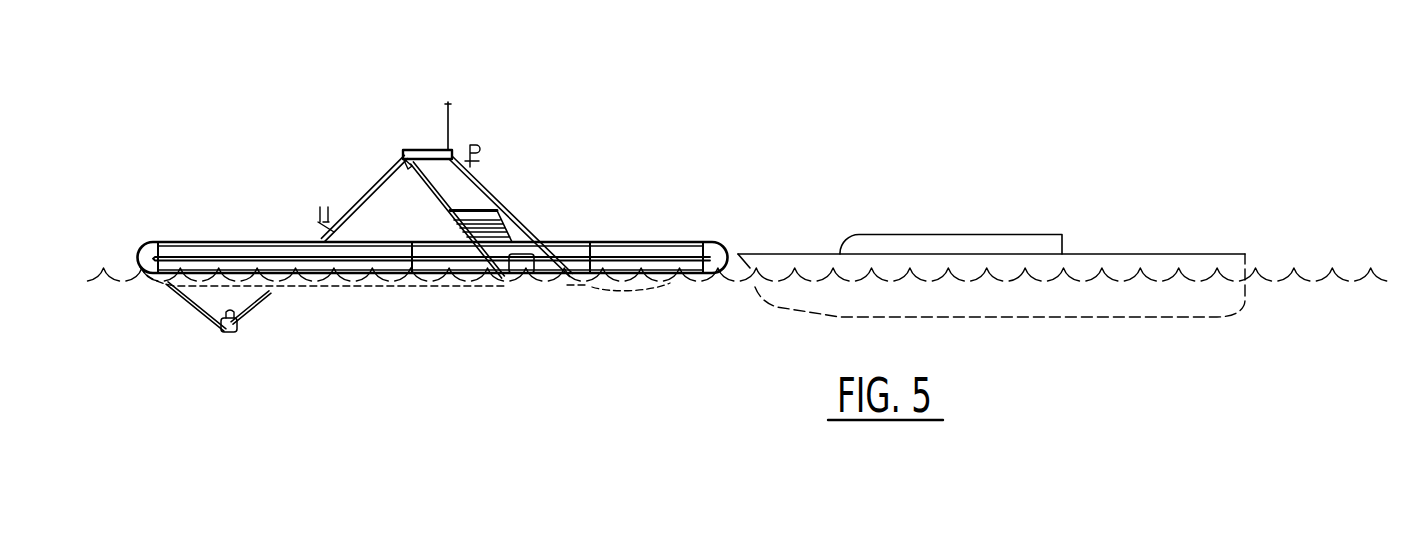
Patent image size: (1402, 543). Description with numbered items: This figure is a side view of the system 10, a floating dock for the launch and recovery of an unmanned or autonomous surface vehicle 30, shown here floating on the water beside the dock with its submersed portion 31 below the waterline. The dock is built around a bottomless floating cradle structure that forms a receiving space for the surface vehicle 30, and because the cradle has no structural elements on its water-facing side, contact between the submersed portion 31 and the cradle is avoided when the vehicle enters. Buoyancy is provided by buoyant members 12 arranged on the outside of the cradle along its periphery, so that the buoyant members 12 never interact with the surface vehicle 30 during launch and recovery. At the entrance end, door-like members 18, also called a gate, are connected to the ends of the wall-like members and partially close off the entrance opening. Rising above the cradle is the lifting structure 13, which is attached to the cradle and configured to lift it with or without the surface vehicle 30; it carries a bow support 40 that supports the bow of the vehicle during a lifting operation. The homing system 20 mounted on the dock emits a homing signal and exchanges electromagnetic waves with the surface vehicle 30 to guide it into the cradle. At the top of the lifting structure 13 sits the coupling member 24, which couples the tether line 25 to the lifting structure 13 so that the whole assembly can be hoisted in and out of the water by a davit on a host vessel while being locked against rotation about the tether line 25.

The system 10 is at (252, 150).
The buoyant members 12 is at (222, 248).
The lifting structure 13 is at (365, 197).
The door-like members 18 is at (645, 228).
The homing system 20 is at (480, 148).
The coupling member 24 is at (448, 150).
The tether line 25 is at (449, 110).
The surface vehicle 30 is at (982, 220).
The submersed portion 31 is at (1058, 300).
The bow support 40 is at (222, 340).